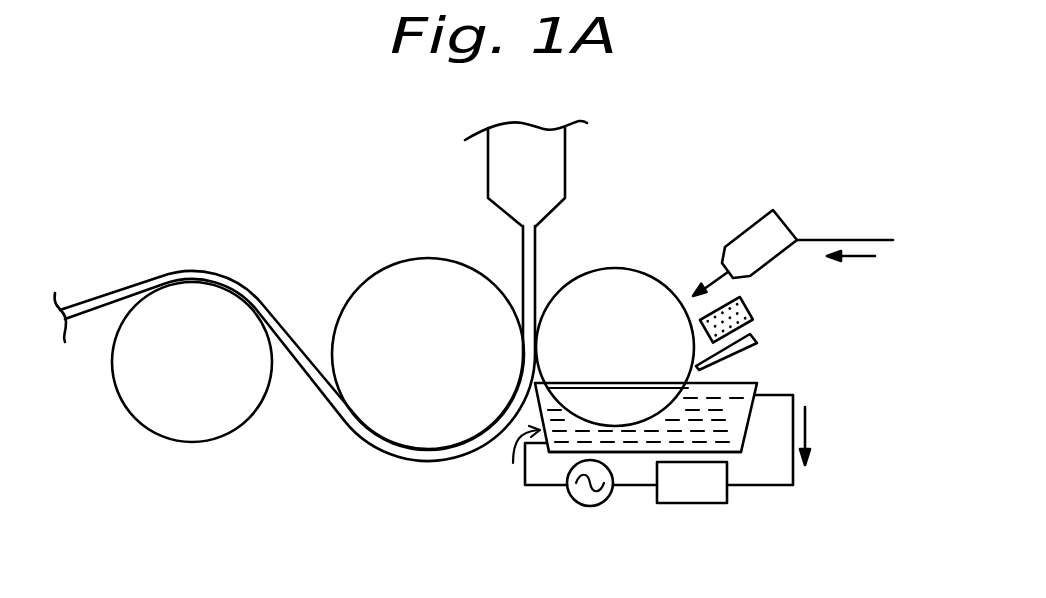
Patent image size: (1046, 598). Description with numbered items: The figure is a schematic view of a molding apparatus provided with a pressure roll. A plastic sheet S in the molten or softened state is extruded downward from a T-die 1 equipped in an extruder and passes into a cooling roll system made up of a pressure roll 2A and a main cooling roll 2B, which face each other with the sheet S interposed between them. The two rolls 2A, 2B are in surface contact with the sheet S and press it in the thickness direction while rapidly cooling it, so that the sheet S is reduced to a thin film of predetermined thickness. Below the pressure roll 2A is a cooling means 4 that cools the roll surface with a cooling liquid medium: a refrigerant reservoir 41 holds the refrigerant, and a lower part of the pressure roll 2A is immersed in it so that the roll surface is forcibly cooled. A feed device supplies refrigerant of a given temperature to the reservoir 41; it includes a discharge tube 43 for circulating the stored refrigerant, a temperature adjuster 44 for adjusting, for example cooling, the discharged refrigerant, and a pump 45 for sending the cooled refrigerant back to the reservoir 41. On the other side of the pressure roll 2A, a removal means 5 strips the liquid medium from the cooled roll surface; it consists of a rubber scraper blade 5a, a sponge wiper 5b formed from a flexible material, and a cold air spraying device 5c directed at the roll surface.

The T-die 1 is at (565, 173).
The plastic sheet S is at (538, 260).
The pressure roll 2A is at (630, 357).
The main cooling roll 2B is at (452, 364).
The cooling means 4 is at (757, 380).
The cooling liquid medium reservoir 41 is at (733, 455).
The discharge tube 43 is at (793, 477).
The temperature adjuster 44 is at (695, 503).
The pump 45 is at (588, 507).
The removal means 5 is at (804, 241).
The rubber scraper blade 5a is at (753, 342).
The sponge wiper 5b is at (747, 313).
The cold air spraying device 5c is at (788, 225).